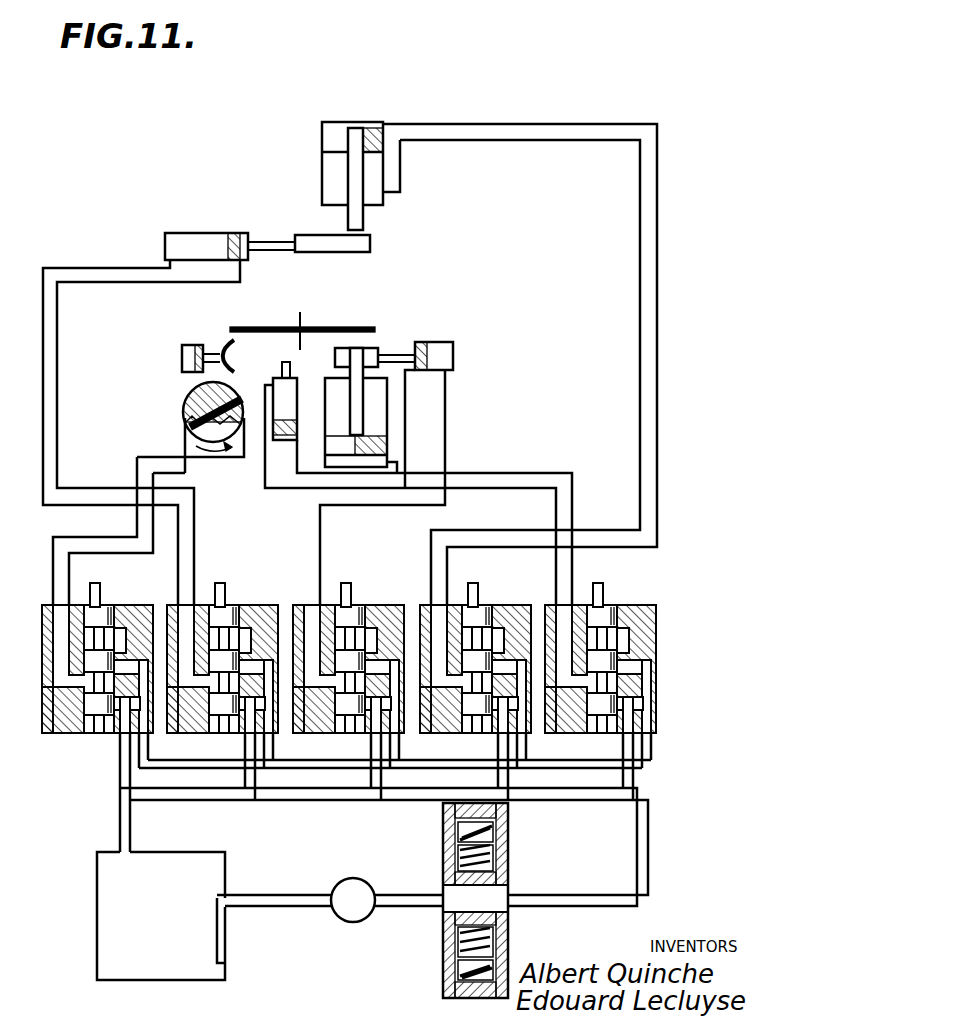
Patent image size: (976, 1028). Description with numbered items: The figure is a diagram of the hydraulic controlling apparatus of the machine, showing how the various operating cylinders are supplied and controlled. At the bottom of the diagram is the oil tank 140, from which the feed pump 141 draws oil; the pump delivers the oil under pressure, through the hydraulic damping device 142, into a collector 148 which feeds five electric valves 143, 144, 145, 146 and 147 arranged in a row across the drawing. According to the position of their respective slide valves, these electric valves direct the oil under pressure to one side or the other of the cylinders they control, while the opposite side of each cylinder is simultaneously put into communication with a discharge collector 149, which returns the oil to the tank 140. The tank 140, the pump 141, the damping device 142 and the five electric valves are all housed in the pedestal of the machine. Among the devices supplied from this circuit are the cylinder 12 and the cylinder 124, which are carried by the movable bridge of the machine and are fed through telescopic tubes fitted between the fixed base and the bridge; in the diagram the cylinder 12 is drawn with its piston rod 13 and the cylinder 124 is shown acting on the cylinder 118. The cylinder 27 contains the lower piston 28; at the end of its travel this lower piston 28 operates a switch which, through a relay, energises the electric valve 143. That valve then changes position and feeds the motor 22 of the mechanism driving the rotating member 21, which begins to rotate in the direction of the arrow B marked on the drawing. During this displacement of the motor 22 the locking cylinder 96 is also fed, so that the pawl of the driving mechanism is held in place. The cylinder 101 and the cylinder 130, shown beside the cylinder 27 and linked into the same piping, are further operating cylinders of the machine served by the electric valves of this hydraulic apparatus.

The cylinder 12 is at (322, 177).
The piston rod 13 is at (350, 132).
The rotating member 21 is at (336, 328).
The motor 22 is at (191, 406).
The cylinder 27 is at (388, 403).
The lower piston 28 is at (390, 446).
The locking cylinder 96 is at (196, 345).
The cylinder 101 is at (296, 420).
The cylinder 118 is at (355, 252).
The cylinder 124 is at (220, 233).
The cylinder 130 is at (447, 348).
The oil tank 140 is at (172, 930).
The feed pump 141 is at (351, 878).
The hydraulic damping device 142 is at (508, 878).
The electric valve 143 is at (141, 600).
The electric valve 144 is at (266, 600).
The electric valve 145 is at (392, 600).
The electric valve 146 is at (520, 600).
The electric valve 147 is at (648, 600).
The collector 148 is at (594, 758).
The discharge collector 149 is at (300, 798).